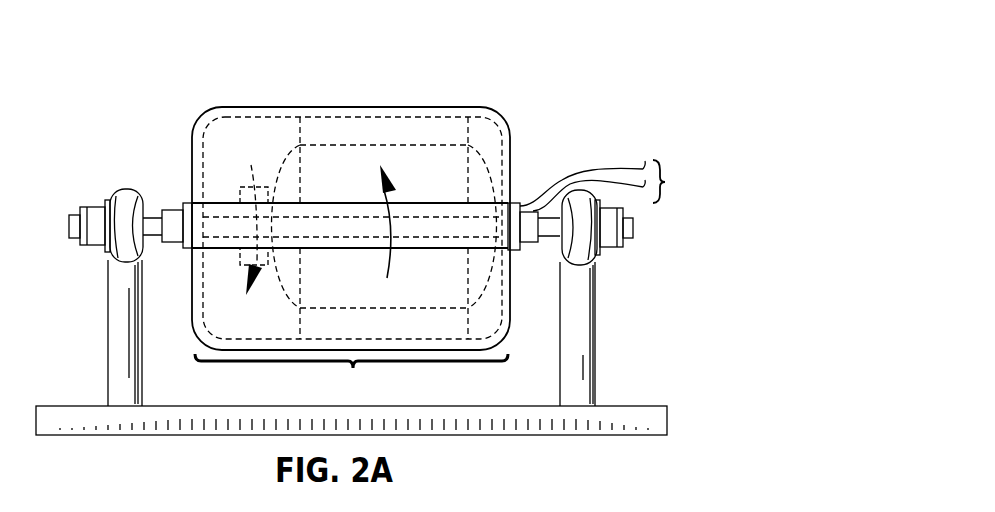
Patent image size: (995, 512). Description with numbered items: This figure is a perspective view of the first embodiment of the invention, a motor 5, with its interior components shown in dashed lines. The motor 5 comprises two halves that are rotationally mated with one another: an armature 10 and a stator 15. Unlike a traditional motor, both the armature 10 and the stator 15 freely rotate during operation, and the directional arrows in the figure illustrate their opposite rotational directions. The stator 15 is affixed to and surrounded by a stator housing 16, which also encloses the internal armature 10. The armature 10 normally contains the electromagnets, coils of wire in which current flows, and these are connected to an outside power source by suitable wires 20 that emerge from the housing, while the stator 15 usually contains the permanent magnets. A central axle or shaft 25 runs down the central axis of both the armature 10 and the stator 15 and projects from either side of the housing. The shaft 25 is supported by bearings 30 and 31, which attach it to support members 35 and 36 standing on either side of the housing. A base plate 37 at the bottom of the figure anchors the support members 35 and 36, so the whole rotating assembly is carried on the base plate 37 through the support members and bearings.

The motor 5 is at (158, 54).
The armature 10 is at (287, 153).
The stator 15 is at (428, 107).
The stator housing 16 is at (351, 376).
The wires 20 is at (610, 185).
The central axle or shaft 25 is at (152, 223).
The bearing 30 is at (114, 196).
The bearing 31 is at (583, 252).
The support member 35 is at (118, 334).
The support member 36 is at (580, 371).
The base plate 37 is at (622, 435).